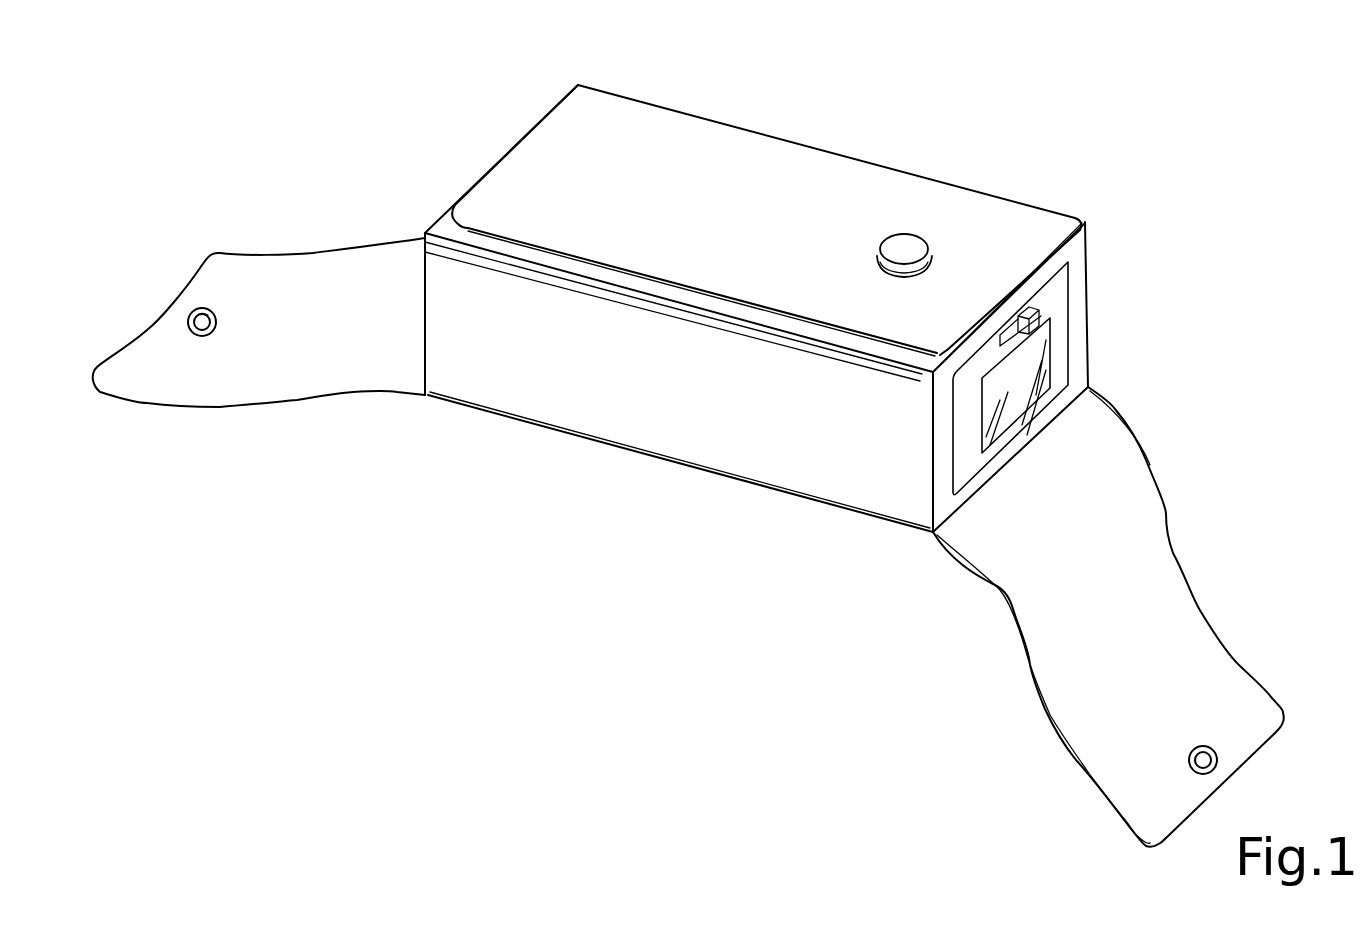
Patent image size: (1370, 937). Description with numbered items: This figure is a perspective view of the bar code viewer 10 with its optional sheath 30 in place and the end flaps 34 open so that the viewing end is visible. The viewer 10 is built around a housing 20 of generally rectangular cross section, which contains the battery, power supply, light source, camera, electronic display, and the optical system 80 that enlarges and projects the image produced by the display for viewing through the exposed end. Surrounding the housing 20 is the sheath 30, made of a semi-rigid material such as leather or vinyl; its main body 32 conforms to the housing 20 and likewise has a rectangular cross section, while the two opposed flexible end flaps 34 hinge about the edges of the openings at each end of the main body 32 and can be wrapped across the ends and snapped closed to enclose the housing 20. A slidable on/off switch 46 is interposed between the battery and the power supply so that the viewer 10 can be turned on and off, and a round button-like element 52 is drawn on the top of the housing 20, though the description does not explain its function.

The bar code viewer 10 is at (935, 118).
The housing 20 is at (947, 510).
The sheath 30 is at (672, 105).
The main body 32 is at (765, 180).
The end flaps 34 is at (271, 275).
The switch 46 is at (1042, 311).
The push button 52 is at (910, 243).
The optical system 80 is at (1117, 363).